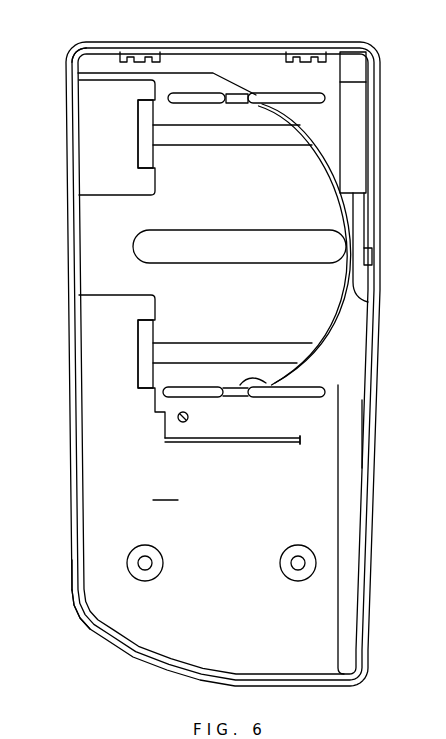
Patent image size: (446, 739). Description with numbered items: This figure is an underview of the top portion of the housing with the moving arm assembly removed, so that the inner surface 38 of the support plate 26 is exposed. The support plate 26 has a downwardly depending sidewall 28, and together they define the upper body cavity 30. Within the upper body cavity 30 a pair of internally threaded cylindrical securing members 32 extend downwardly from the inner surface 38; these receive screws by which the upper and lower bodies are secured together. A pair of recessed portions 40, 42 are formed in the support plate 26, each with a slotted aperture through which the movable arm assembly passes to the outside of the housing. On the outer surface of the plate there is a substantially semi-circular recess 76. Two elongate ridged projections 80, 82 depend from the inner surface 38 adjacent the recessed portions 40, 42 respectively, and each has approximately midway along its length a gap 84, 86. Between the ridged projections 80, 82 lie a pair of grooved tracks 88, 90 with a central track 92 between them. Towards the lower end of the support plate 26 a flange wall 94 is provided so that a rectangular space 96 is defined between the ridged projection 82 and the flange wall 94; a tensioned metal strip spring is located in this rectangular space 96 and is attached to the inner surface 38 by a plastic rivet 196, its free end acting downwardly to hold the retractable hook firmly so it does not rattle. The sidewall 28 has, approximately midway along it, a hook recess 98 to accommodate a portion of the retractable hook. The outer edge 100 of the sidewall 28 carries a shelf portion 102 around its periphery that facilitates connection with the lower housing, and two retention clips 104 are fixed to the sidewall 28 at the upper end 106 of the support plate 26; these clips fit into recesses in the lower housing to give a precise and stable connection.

The support plate 26 is at (92, 460).
The sidewall 28 is at (72, 491).
The upper body cavity 30 is at (165, 491).
The cylindrical securing members 32 is at (156, 578).
The inner surface 38 is at (93, 545).
The recessed portion 40 is at (88, 133).
The recessed portion 42 is at (88, 328).
The semi-circular recess 76 is at (338, 170).
The ridged projection 80 is at (197, 92).
The ridged projection 82 is at (300, 442).
The gap 84 is at (241, 93).
The gap 86 is at (320, 383).
The grooved track 88 is at (300, 133).
The grooved track 90 is at (268, 352).
The central track 92 is at (320, 232).
The flange wall 94 is at (252, 444).
The rectangular space 96 is at (362, 469).
The hook recess 98 is at (357, 313).
The outer edge 100 is at (72, 596).
The shelf portion 102 is at (82, 623).
The retention clips 104 is at (140, 50).
The upper end 106 is at (88, 67).
The plastic rivet 196 is at (177, 415).